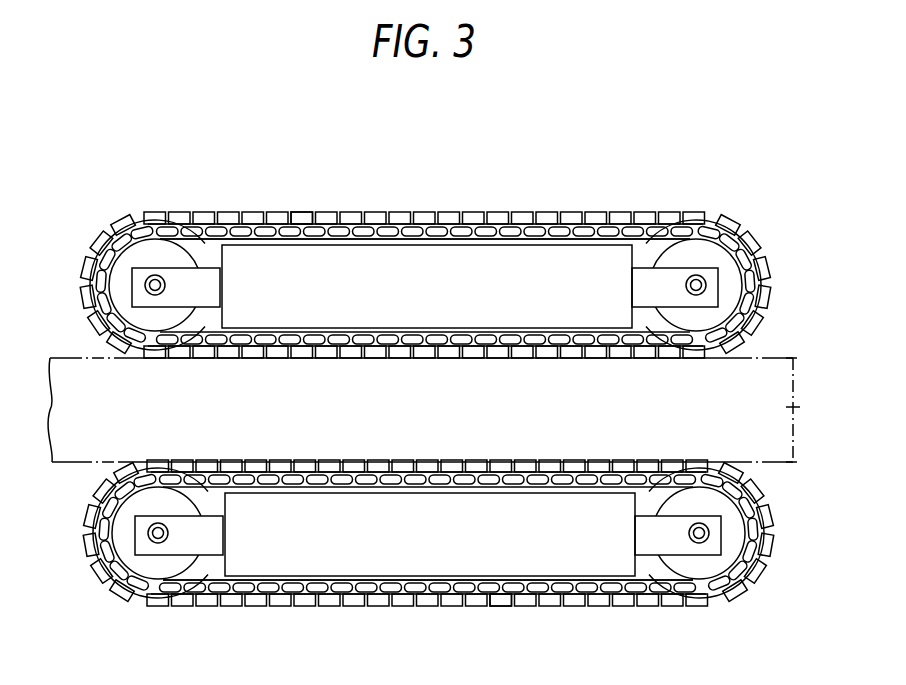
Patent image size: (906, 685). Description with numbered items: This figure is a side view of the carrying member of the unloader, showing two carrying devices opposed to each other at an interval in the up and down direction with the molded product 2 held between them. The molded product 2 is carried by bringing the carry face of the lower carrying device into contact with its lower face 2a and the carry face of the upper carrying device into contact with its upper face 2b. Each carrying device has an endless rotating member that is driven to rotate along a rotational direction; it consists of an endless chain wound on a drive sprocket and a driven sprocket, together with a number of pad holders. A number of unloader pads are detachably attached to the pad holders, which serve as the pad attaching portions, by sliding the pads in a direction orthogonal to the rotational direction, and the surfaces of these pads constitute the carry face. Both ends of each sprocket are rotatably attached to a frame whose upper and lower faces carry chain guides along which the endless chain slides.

The molded product 2 is at (449, 408).
The lower face of the molded product 2a is at (795, 462).
The upper face of the molded product 2b is at (787, 356).